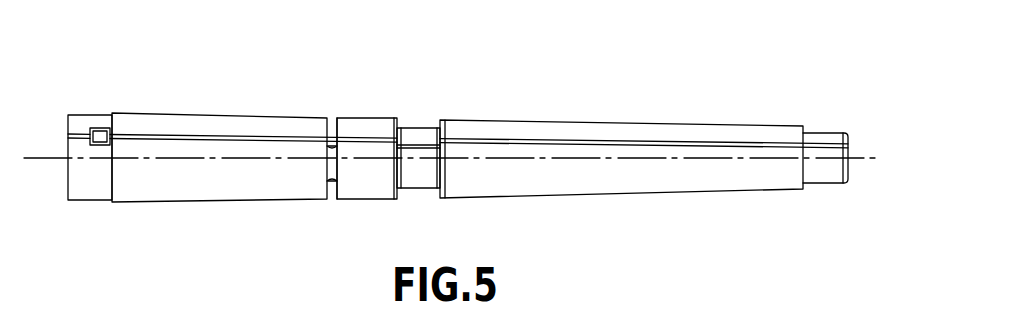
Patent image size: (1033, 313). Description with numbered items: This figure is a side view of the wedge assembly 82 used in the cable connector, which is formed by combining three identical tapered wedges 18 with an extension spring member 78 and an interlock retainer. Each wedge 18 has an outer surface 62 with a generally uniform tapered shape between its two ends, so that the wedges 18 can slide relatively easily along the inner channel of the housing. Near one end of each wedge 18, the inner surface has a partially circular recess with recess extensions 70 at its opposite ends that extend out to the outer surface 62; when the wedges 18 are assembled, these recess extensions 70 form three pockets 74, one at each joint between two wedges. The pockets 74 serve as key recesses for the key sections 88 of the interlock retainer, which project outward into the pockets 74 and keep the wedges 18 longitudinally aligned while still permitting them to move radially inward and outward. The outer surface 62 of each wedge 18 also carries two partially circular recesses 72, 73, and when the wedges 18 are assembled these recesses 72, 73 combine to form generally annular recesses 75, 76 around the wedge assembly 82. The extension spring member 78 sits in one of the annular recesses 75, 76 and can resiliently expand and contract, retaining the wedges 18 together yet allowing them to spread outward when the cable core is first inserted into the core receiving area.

The assembly 82 is at (588, 47).
The wedge 18 is at (627, 121).
The outer surface 62 is at (187, 192).
The recess extension 70 is at (102, 129).
The pocket 74 is at (88, 135).
The key section 88 is at (112, 133).
The partially circular recess 73 is at (332, 118).
The annular recess 75 is at (323, 167).
The annular recess 76 is at (410, 130).
The partially circular recess 72 is at (431, 128).
The extension spring member 78 is at (430, 163).